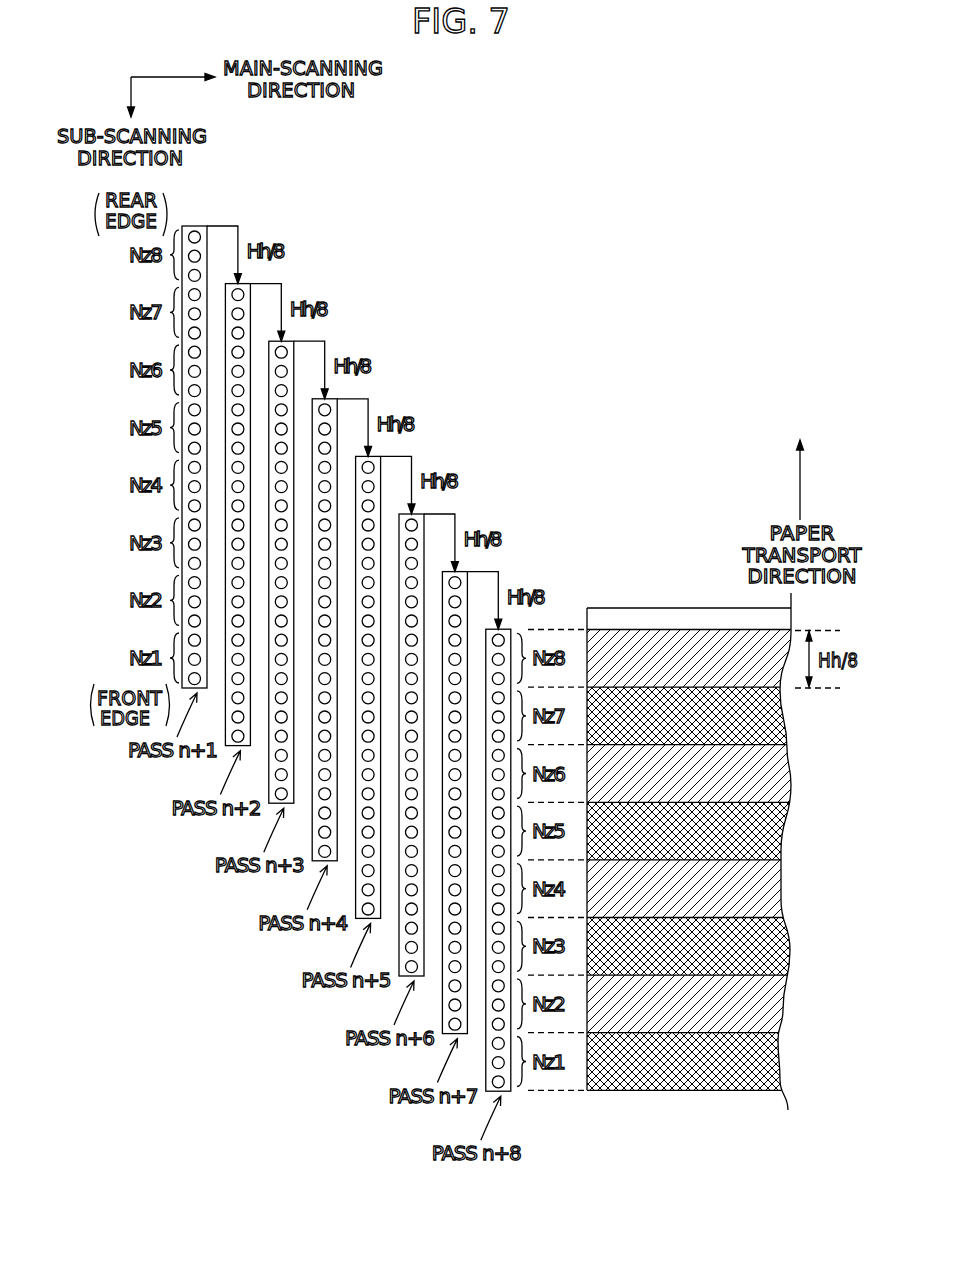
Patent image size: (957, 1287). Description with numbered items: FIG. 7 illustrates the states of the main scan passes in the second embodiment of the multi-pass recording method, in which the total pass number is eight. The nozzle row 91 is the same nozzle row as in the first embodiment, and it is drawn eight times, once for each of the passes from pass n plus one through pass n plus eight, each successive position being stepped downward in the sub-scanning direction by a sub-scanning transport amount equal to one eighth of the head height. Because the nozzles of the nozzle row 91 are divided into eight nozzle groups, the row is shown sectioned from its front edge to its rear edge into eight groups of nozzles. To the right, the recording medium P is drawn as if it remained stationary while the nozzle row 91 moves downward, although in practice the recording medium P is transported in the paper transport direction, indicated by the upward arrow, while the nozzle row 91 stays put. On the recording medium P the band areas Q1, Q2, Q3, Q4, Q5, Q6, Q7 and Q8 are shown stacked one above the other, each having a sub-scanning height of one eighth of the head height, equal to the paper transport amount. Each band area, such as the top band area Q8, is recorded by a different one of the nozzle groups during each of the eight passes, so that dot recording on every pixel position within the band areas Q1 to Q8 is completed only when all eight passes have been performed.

The nozzle row 91 is at (190, 226).
The recording medium P is at (694, 832).
The band area Q1 is at (694, 1062).
The band area Q2 is at (694, 1004).
The band area Q3 is at (694, 947).
The band area Q4 is at (694, 889).
The band area Q5 is at (694, 831).
The band area Q6 is at (694, 774).
The band area Q7 is at (694, 716).
The band area Q8 is at (694, 659).